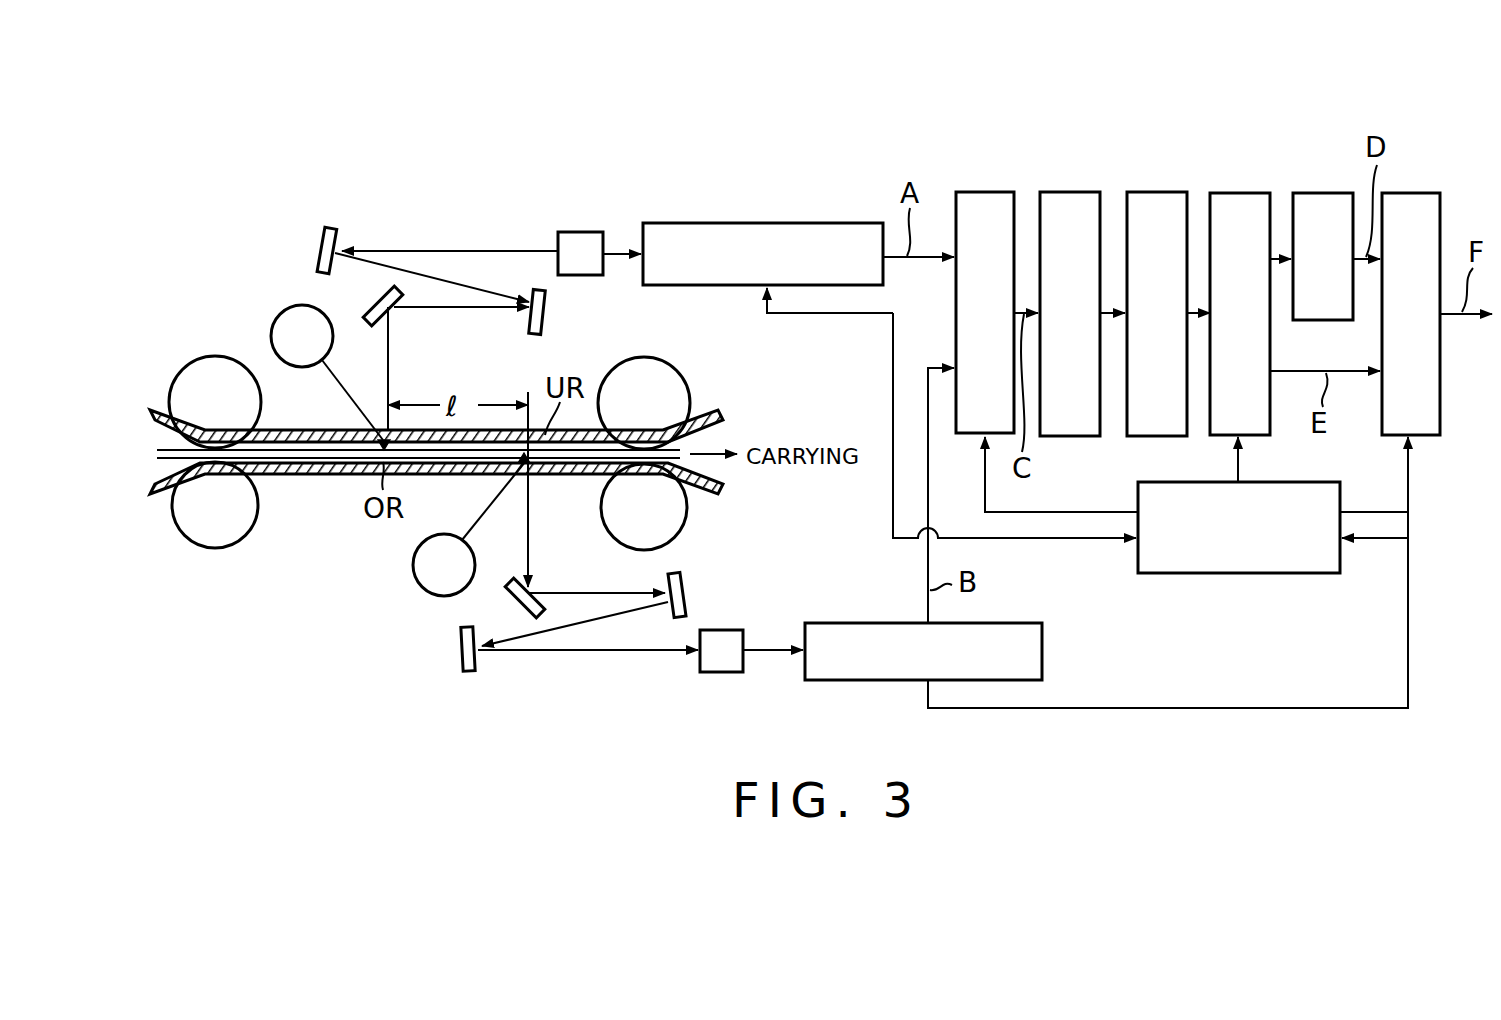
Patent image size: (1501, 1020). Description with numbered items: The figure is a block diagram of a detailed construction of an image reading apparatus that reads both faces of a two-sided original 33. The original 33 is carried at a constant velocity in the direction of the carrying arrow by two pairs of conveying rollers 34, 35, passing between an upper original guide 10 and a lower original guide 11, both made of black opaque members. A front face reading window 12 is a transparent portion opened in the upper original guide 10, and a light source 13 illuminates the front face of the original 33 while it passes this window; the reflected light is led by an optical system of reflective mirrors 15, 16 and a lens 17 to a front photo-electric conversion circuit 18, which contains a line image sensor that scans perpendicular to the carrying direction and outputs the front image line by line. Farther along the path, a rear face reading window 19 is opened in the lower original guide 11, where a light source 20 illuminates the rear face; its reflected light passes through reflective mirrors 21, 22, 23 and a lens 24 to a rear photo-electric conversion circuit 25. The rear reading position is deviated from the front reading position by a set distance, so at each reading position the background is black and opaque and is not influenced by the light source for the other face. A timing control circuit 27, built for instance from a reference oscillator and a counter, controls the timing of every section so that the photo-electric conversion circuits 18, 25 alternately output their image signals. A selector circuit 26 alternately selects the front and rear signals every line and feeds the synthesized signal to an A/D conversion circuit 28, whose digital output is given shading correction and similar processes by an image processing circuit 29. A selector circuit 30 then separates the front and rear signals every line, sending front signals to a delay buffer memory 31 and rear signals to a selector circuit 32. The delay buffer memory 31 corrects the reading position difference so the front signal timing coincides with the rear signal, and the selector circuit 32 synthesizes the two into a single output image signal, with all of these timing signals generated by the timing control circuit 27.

The original guide 10 is at (483, 432).
The original guide 11 is at (312, 476).
The front face reading window 12 is at (405, 430).
The light source 13 is at (280, 322).
The reflective mirror 15 is at (548, 312).
The reflective mirror 16 is at (318, 243).
The lens 17 is at (578, 231).
The photo-electric conversion circuit 18 is at (790, 224).
The rear face reading window 19 is at (542, 470).
The light source 20 is at (413, 575).
The reflective mirror 21 is at (512, 585).
The reflective mirror 22 is at (690, 595).
The reflective mirror 23 is at (458, 652).
The lens 24 is at (722, 673).
The photo-electric conversion circuit 25 is at (845, 681).
The selector circuit 26 is at (994, 191).
The timing control circuit 27 is at (1258, 575).
The A/D conversion circuit 28 is at (1074, 191).
The image processing circuit 29 is at (1156, 191).
The selector circuit 30 is at (1244, 192).
The delay buffer memory 31 is at (1326, 192).
The selector circuit 32 is at (1422, 192).
The two-sided original 33 is at (162, 452).
The conveying rollers 34 is at (190, 375).
The conveying rollers 35 is at (686, 388).